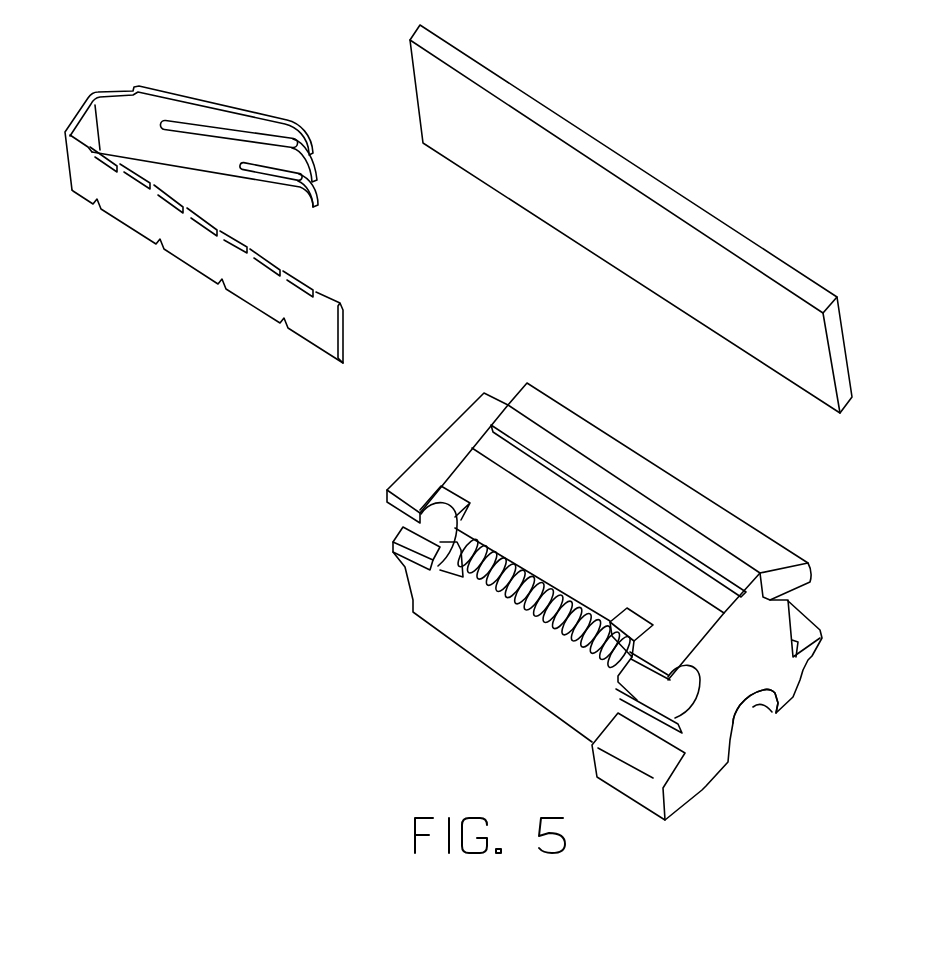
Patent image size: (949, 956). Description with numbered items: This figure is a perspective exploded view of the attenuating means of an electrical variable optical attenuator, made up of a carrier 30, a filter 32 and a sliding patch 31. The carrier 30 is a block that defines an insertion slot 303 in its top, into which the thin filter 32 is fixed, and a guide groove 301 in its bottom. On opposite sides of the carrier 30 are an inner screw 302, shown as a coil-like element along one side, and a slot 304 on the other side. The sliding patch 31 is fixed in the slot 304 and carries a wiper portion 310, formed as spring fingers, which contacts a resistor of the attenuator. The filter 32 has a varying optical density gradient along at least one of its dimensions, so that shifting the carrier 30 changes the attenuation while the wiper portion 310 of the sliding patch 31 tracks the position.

The carrier 30 is at (525, 665).
The guide groove 301 is at (735, 722).
The inner screw 302 is at (487, 587).
The insertion slot 303 is at (508, 445).
The slot 304 is at (787, 599).
The sliding patch 31 is at (175, 237).
The wiper portion 310 is at (303, 128).
The filter 32 is at (642, 218).